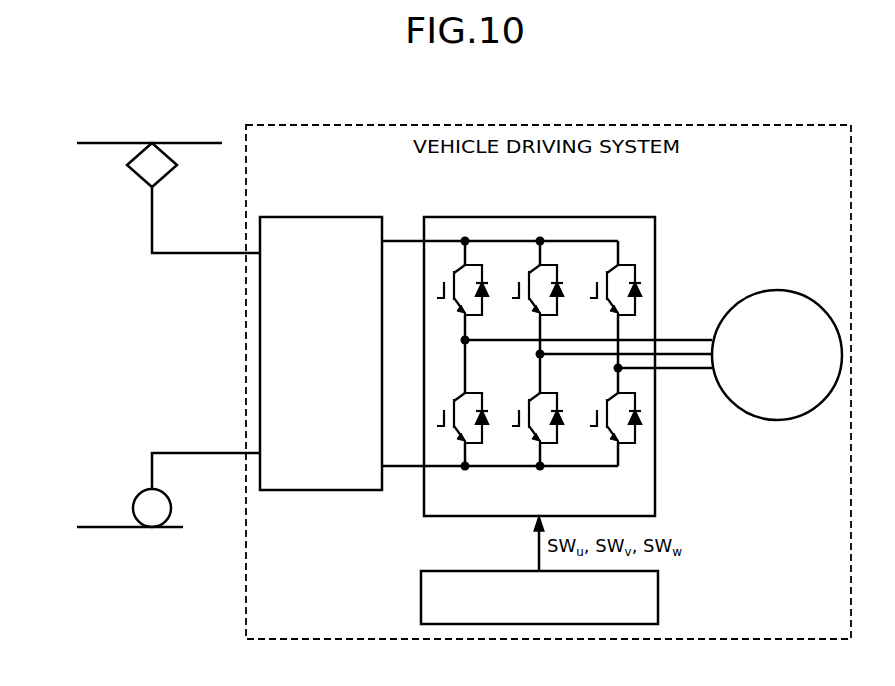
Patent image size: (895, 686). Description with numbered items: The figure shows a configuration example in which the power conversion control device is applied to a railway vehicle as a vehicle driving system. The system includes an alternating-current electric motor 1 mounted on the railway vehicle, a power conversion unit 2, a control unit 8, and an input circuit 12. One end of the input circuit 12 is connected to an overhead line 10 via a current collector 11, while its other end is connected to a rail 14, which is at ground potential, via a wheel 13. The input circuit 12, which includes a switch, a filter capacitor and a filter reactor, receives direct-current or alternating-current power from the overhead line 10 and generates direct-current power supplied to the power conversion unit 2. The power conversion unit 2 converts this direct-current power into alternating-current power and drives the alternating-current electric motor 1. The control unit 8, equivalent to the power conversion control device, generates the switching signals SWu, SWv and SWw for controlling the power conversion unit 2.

The alternating-current electric motor 1 is at (777, 420).
The power conversion unit 2 is at (610, 217).
The control unit 8 is at (660, 597).
The overhead line 10 is at (96, 143).
The current collector 11 is at (138, 178).
The input circuit 12 is at (323, 217).
The wheel 13 is at (136, 492).
The rail 14 is at (127, 530).